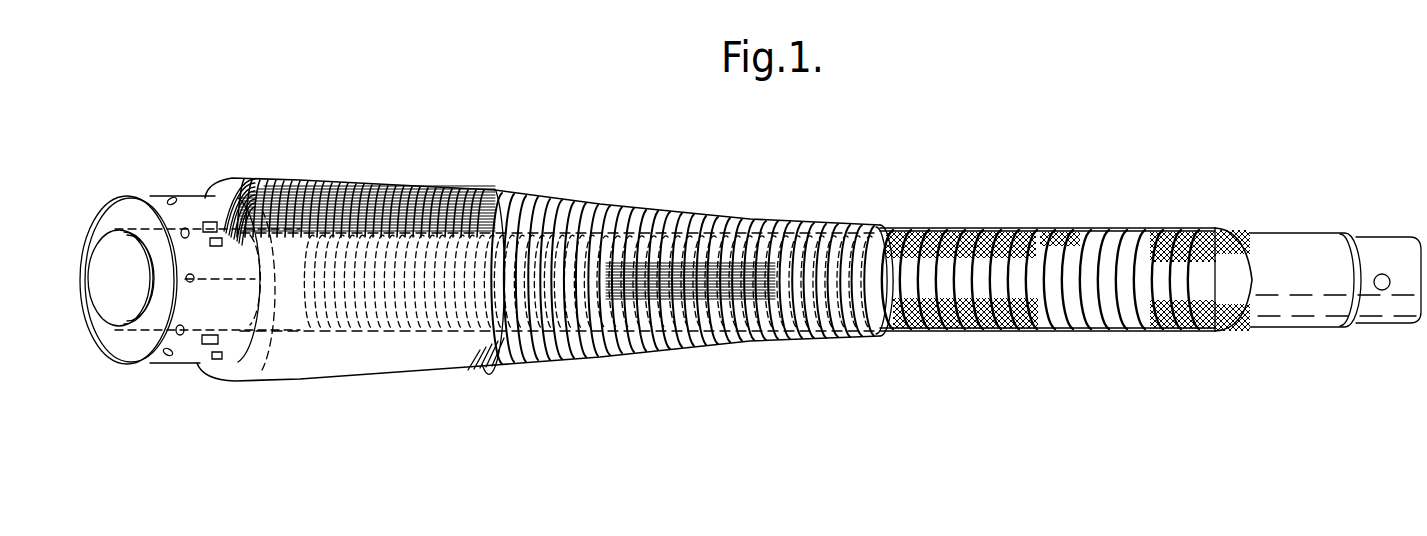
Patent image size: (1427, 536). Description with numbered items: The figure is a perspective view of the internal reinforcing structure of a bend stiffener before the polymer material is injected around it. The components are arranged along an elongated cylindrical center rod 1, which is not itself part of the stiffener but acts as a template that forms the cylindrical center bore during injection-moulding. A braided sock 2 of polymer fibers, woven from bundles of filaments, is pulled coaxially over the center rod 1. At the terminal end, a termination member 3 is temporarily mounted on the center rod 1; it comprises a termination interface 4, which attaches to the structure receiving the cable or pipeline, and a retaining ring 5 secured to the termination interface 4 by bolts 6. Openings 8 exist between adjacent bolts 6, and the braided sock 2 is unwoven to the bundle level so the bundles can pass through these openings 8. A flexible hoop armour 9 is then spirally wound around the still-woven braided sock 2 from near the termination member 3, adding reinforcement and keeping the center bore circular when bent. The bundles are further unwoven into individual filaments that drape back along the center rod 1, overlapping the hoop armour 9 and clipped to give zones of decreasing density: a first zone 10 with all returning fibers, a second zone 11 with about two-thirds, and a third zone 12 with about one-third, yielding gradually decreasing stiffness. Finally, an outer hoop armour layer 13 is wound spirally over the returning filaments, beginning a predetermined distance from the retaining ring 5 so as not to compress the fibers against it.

The center rod 1 is at (1278, 241).
The braided sock 2 is at (1205, 232).
The termination member 3 is at (146, 370).
The termination interface 4 is at (118, 196).
The retaining ring 5 is at (280, 265).
The bolts 6 is at (212, 345).
The openings 8 is at (258, 305).
The hoop armour 9 is at (405, 333).
The first zone 10 is at (514, 186).
The second zone 11 is at (686, 204).
The third zone 12 is at (820, 218).
The outer hoop armour layer 13 is at (1181, 320).